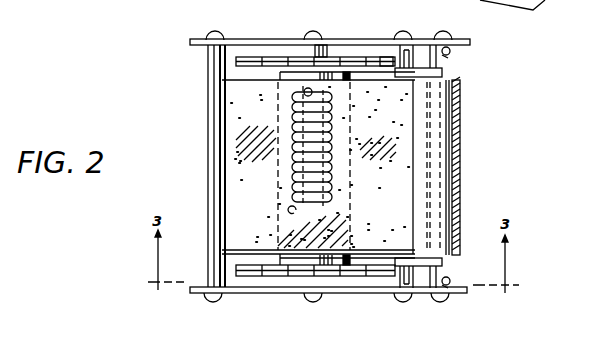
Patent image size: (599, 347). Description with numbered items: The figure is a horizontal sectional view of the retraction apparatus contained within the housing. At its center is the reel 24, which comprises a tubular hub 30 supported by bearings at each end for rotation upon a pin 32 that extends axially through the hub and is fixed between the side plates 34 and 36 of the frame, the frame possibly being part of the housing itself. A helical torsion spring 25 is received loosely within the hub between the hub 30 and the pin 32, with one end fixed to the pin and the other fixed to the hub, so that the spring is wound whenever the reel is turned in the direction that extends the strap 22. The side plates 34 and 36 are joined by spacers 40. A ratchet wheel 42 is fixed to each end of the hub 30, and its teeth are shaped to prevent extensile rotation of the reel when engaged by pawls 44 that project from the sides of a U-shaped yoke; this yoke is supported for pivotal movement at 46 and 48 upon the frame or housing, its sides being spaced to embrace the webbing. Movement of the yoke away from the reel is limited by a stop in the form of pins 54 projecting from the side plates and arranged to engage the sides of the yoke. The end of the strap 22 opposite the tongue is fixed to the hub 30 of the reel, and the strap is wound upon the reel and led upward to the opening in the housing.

The strap 22 is at (458, 110).
The reel 24 is at (247, 122).
The helical torsion spring 25 is at (333, 168).
The tubular hub 30 is at (283, 72).
The pin 32 is at (323, 47).
The side plate 34 is at (265, 295).
The side plate 36 is at (277, 41).
The spacers 40 is at (217, 170).
The ratchet wheel 42 is at (252, 58).
The pawls 44 is at (448, 57).
The pivot 46 is at (398, 280).
The pivot 48 is at (412, 50).
The pins 54 is at (423, 278).